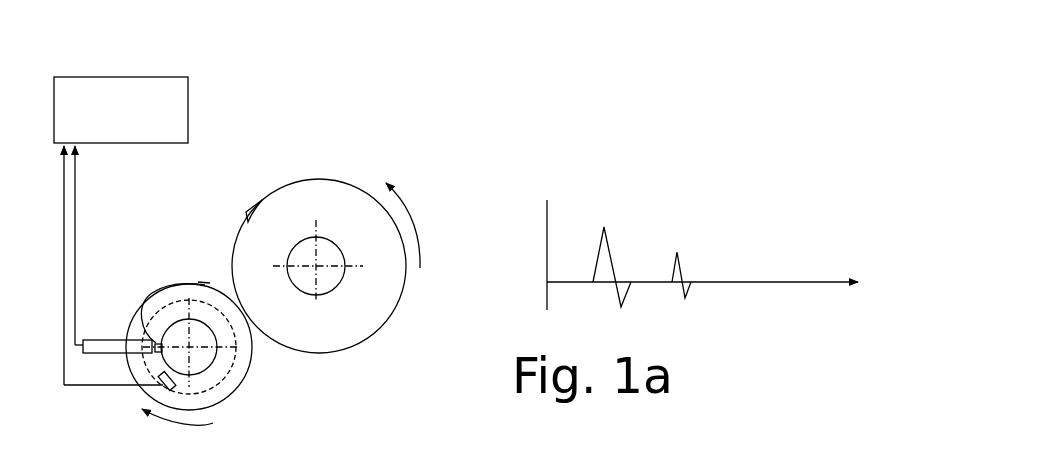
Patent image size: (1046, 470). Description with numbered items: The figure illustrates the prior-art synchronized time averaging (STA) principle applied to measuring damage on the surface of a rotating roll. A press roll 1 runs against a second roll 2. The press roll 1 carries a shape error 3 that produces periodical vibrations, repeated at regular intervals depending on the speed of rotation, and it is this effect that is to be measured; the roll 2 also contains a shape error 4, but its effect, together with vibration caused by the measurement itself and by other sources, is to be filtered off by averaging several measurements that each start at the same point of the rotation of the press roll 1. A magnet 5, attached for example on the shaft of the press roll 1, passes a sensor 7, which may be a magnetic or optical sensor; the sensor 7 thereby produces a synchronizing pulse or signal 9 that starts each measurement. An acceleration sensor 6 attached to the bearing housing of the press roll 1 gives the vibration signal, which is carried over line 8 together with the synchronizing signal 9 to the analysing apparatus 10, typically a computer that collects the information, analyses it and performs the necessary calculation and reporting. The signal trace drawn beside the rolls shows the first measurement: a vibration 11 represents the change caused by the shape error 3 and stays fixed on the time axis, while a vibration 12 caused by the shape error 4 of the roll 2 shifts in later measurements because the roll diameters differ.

The press roll 1 is at (240, 377).
The roll 2 is at (368, 332).
The shape error 3 is at (203, 286).
The shape error 4 is at (250, 207).
The magnet 5 is at (163, 286).
The acceleration sensor 6 is at (175, 388).
The sensor 7 is at (112, 349).
The signal line 8 is at (66, 232).
The synchronizing pulse 9 is at (78, 178).
The analysing apparatus 10 is at (165, 98).
The vibration 11 is at (600, 253).
The vibration 12 is at (670, 267).